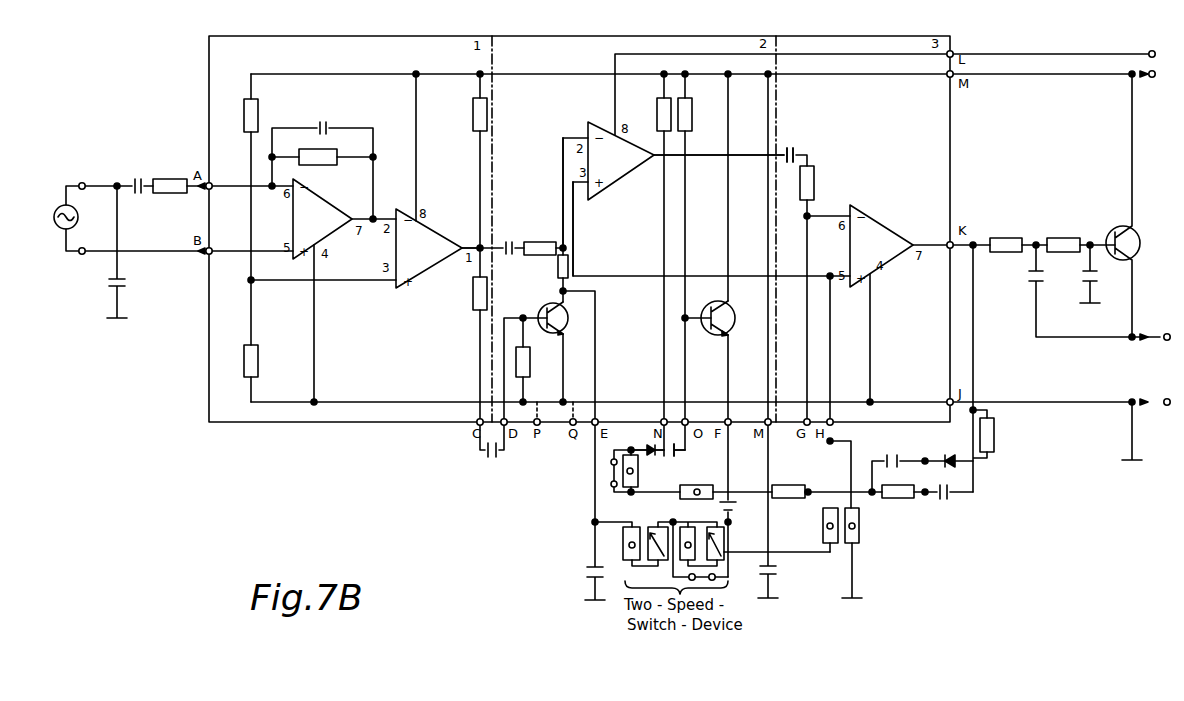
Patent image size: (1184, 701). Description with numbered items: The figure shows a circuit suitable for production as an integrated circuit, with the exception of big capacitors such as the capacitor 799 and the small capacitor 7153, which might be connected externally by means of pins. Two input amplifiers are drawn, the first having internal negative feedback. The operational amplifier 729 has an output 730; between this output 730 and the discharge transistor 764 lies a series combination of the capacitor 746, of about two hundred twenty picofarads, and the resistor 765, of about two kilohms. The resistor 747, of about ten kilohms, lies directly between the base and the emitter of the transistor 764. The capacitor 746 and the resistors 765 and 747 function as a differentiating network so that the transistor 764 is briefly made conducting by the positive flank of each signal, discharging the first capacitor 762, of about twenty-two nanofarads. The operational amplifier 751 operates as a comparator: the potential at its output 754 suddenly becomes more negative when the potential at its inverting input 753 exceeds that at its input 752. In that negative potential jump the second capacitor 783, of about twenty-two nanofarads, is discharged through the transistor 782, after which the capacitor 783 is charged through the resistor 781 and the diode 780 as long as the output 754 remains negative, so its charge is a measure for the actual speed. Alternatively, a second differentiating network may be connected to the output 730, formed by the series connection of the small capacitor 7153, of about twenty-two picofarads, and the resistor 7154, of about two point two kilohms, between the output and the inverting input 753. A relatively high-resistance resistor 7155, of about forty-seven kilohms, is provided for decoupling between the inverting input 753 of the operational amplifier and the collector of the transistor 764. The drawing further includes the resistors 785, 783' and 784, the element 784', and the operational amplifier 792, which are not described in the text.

The operational amplifier 729 is at (426, 232).
The output 730 is at (462, 256).
The capacitor 746 is at (486, 455).
The resistor 747 is at (530, 362).
The operational amplifier 751 is at (598, 105).
The input 752 is at (573, 220).
The inverting input 753 is at (563, 138).
The output 754 is at (655, 158).
The first capacitor 762 is at (579, 573).
The discharge transistor 764 is at (560, 328).
The resistor 765 is at (472, 296).
The diode 780 is at (639, 471).
The resistor 781 is at (689, 486).
The transistor 782 is at (731, 306).
The second capacitor 783 is at (710, 511).
The resistor 783' is at (701, 114).
The resistor 784 is at (788, 482).
The diode capacitor branch 784' is at (676, 454).
The resistor 785 is at (656, 116).
The operational amplifier 792 is at (888, 229).
The capacitor 799 is at (790, 147).
The small capacitor 7153 is at (556, 266).
The resistor 7154 is at (541, 235).
The high-resistance resistor 7155 is at (561, 294).